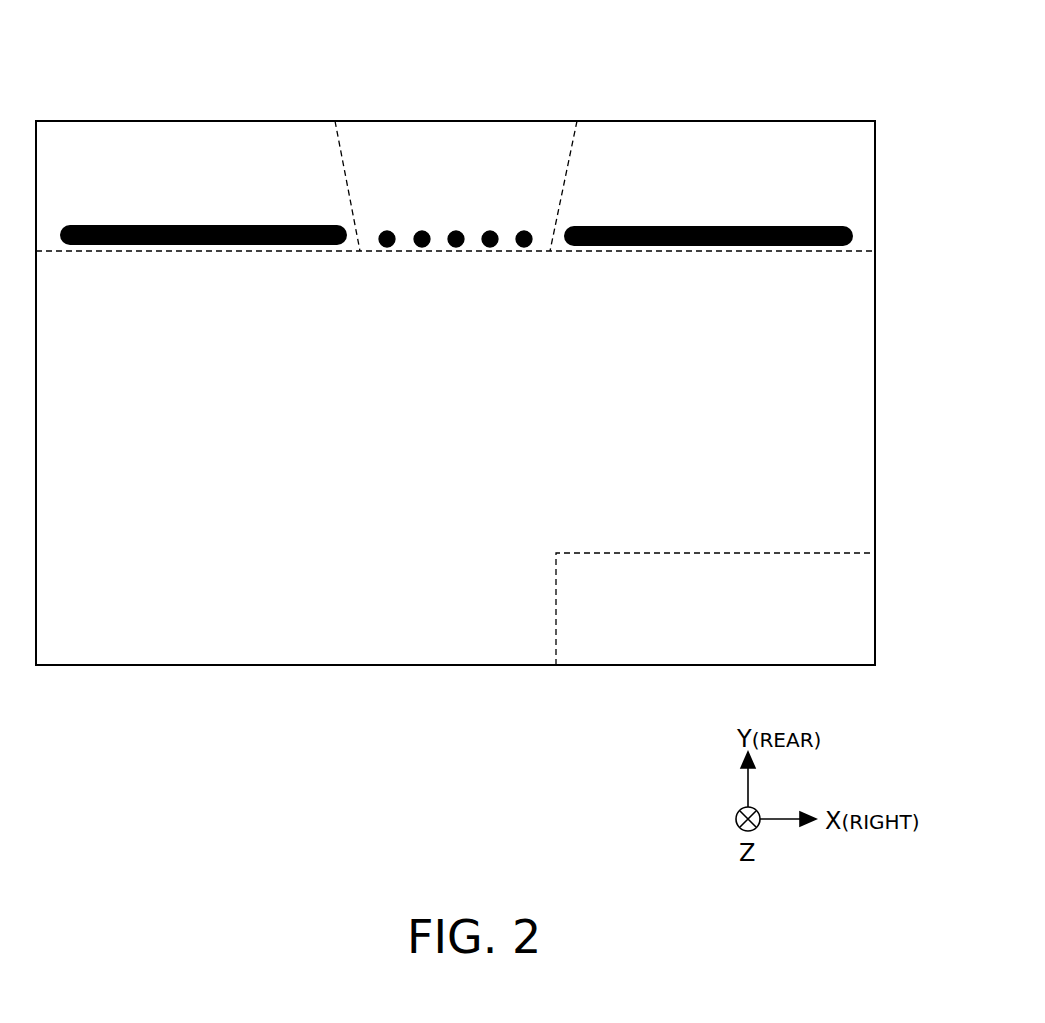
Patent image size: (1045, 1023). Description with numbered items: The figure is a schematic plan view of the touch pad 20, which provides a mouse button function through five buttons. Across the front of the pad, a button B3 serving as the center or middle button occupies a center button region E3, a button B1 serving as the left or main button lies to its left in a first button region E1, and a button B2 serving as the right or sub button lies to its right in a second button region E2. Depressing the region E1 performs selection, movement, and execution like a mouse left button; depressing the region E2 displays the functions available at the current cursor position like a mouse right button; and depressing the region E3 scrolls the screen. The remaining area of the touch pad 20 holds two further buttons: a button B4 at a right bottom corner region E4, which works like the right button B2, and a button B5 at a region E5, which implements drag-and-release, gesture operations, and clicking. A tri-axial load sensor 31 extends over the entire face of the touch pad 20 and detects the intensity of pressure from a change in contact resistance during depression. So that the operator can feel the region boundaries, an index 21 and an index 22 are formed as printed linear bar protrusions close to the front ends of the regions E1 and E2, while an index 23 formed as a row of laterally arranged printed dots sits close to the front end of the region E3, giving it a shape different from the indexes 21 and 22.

The touch pad 20 is at (860, 80).
The index 21 is at (100, 226).
The index 22 is at (855, 232).
The index 23 is at (533, 230).
The load sensor 31 is at (842, 321).
The region E1 is at (174, 126).
The button B1 is at (242, 136).
The region E2 is at (699, 126).
The button B2 is at (764, 136).
The region E3 is at (454, 126).
The button B3 is at (522, 136).
The right bottom corner region E4 is at (874, 632).
The button B4 is at (862, 578).
The region E5 is at (874, 436).
The button B5 is at (862, 385).